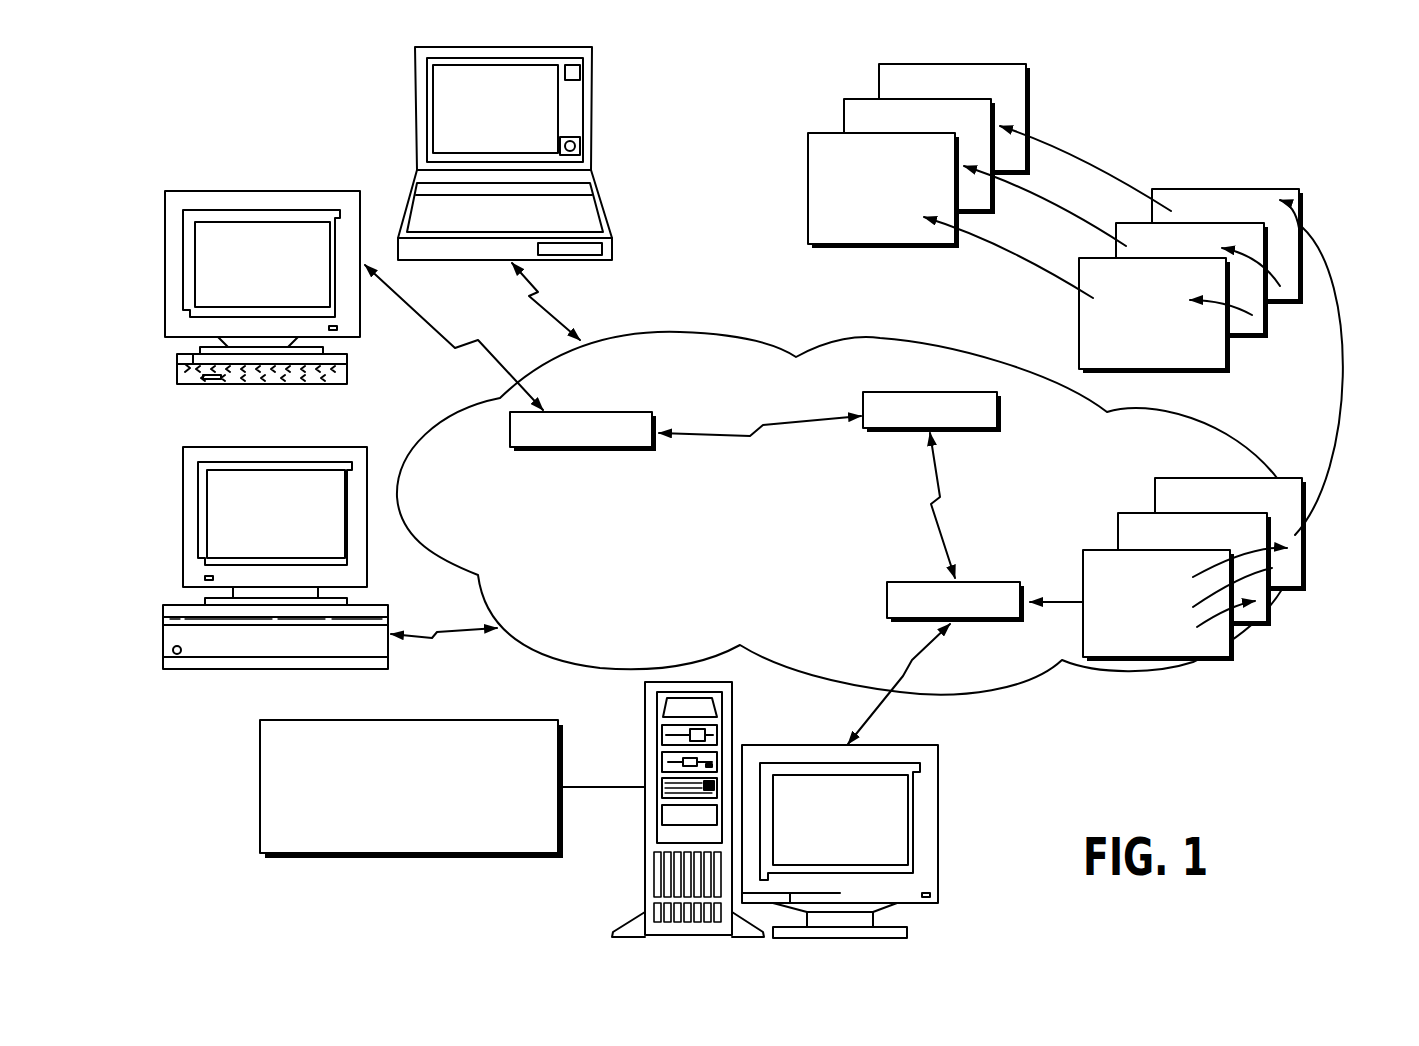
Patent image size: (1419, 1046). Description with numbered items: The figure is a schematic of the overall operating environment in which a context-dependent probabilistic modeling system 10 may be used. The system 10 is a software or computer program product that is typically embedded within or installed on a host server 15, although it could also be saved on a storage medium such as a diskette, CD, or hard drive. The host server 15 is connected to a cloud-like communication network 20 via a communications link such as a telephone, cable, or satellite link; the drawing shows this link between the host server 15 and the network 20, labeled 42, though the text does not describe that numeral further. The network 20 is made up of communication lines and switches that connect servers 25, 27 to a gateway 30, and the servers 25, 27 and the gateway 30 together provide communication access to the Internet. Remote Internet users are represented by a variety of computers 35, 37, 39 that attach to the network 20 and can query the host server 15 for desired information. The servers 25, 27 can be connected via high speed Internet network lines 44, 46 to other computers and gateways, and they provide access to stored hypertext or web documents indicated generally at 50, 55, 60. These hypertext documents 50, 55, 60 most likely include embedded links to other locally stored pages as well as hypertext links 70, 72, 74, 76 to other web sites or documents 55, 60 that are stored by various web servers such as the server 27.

The context-dependent probabilistic modeling system 10 is at (258, 762).
The host server 15 is at (643, 727).
The communication network 20 is at (708, 333).
The server 25 is at (932, 580).
The server 27 is at (948, 393).
The gateway 30 is at (582, 452).
The computer 35 is at (605, 207).
The computer 37 is at (327, 190).
The computer 39 is at (330, 445).
The communication link 42 is at (866, 722).
The high speed Internet network line 44 is at (945, 535).
The high speed Internet network line 46 is at (745, 422).
The hypertext documents 50 is at (1315, 553).
The hypertext documents 55 is at (1310, 215).
The hypertext documents 60 is at (822, 116).
The hypertext link 70 is at (1334, 396).
The hypertext link 72 is at (1107, 173).
The hypertext link 74 is at (1067, 211).
The hypertext link 76 is at (1017, 256).